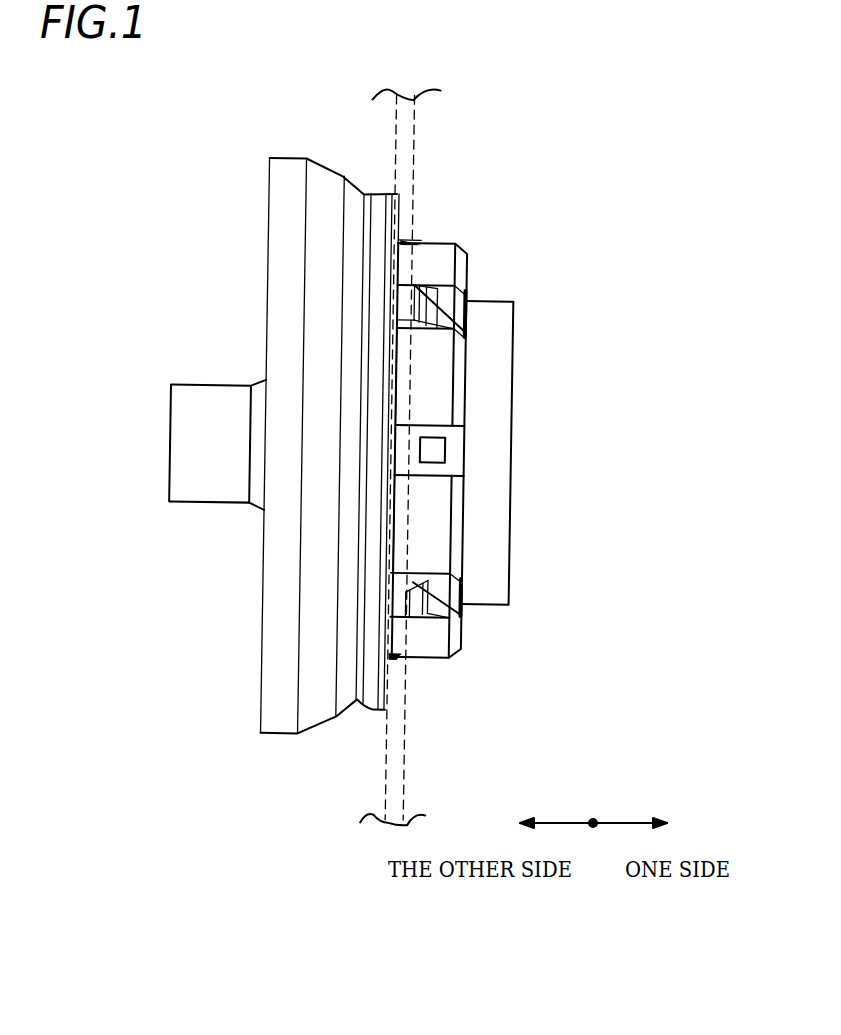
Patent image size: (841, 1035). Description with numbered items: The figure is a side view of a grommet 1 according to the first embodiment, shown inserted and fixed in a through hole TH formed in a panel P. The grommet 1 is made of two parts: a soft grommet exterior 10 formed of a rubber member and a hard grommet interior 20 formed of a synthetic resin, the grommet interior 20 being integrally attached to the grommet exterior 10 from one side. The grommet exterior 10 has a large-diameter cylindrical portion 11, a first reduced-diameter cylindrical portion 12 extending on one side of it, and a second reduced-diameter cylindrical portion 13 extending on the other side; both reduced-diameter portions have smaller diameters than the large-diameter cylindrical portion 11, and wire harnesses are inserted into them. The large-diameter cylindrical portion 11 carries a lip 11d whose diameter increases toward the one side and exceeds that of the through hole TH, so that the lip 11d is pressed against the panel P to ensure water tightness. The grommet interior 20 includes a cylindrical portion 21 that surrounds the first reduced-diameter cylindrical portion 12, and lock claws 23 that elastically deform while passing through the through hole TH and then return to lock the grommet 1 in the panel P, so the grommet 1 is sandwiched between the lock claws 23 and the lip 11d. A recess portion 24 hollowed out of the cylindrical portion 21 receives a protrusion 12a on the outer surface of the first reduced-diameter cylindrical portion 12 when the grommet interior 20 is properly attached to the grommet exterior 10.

The grommet 1 is at (566, 151).
The grommet exterior 10 is at (298, 132).
The large-diameter cylindrical portion 11 is at (283, 190).
The lip 11d is at (378, 695).
The first reduced-diameter cylindrical portion 12 is at (493, 350).
The protrusion 12a is at (447, 447).
The second reduced-diameter cylindrical portion 13 is at (200, 490).
The grommet interior 20 is at (507, 450).
The cylindrical portion 21 is at (395, 450).
The lock claws 23 is at (452, 300).
The recess portion 24 is at (437, 432).
The through hole TH is at (433, 240).
The panel P is at (395, 745).